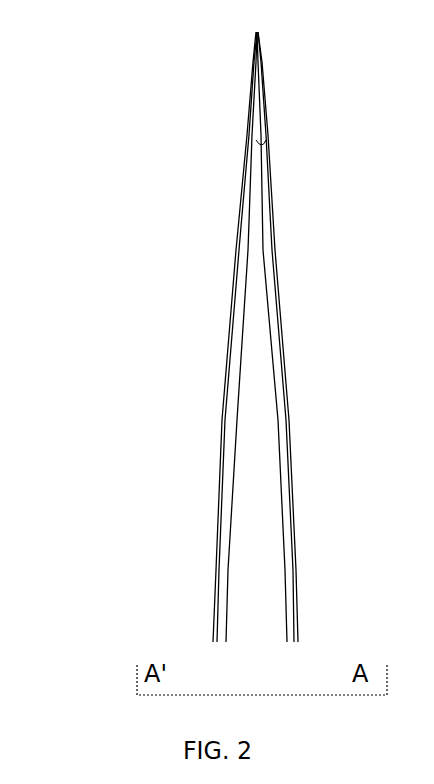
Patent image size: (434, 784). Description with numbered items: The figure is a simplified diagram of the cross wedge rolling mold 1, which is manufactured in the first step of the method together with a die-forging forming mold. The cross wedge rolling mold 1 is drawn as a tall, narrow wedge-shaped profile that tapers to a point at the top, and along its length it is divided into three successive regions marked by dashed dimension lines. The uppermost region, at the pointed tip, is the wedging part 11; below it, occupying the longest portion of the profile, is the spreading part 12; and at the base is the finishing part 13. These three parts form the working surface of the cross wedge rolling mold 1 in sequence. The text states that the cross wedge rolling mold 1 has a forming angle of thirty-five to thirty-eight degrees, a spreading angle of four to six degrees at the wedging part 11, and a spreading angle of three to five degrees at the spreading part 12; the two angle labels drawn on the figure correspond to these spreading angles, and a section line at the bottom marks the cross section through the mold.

The cross wedge rolling mold 1 is at (204, 337).
The wedging part 11 is at (257, 32).
The spreading part 12 is at (297, 570).
The finishing part 13 is at (311, 615).